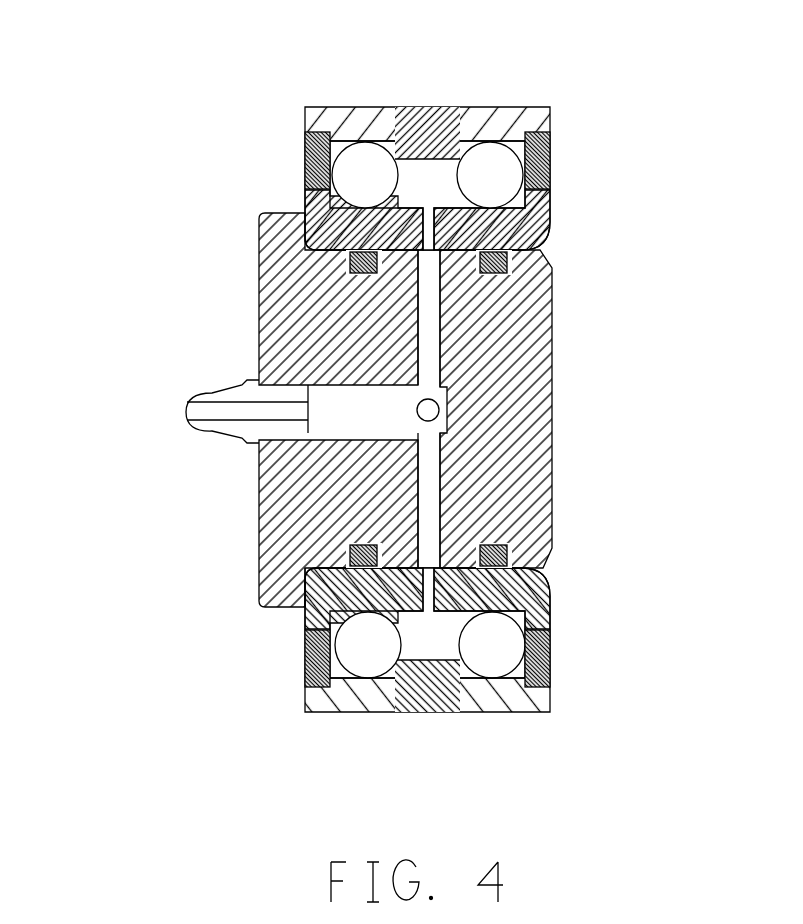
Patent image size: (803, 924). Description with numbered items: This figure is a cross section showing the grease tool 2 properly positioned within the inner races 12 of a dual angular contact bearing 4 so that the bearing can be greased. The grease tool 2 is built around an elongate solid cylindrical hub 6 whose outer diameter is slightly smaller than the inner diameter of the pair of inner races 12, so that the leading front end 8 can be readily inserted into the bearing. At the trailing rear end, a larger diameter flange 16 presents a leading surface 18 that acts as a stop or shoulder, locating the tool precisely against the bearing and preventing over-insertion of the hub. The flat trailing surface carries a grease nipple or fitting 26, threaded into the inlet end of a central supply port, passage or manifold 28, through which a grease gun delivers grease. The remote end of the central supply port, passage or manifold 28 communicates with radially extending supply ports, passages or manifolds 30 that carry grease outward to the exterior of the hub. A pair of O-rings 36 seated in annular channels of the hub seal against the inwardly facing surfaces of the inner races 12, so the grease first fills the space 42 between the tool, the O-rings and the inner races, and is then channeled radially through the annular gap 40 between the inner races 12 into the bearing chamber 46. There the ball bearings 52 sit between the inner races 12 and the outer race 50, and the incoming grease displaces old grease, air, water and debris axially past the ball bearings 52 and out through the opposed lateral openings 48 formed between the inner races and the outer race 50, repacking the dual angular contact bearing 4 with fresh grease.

The grease tool 2 is at (190, 270).
The dual angular contact bearing 4 is at (290, 740).
The elongate solid cylindrical hub 6 is at (260, 490).
The leading front end 8 is at (553, 467).
The inner race 12 is at (300, 160).
The flange 16 is at (303, 606).
The leading surface 18 is at (400, 150).
The grease nipple or fitting 26 is at (230, 392).
The supply port, passage or manifold 28 is at (260, 530).
The radially extending supply port, passage or manifold 30 is at (445, 328).
The O-ring 36 is at (352, 262).
The annular gap 40 is at (431, 224).
The space 42 is at (425, 325).
The bearing chamber 46 is at (422, 173).
The lateral opening 48 is at (300, 158).
The outer race 50 is at (428, 690).
The ball bearing 52 is at (364, 172).